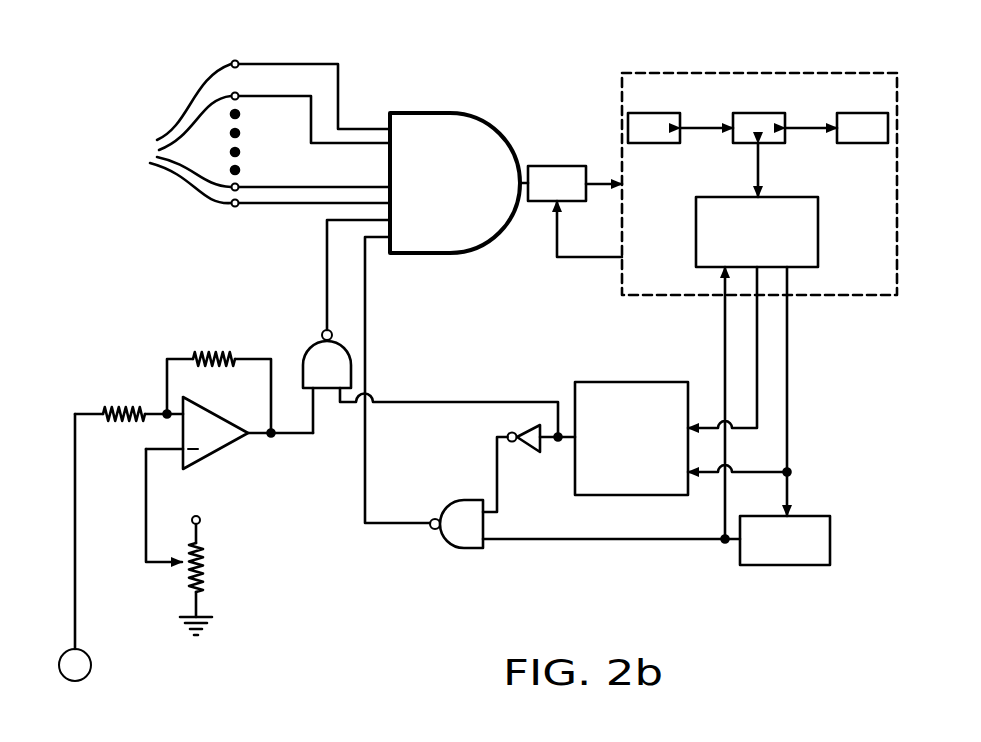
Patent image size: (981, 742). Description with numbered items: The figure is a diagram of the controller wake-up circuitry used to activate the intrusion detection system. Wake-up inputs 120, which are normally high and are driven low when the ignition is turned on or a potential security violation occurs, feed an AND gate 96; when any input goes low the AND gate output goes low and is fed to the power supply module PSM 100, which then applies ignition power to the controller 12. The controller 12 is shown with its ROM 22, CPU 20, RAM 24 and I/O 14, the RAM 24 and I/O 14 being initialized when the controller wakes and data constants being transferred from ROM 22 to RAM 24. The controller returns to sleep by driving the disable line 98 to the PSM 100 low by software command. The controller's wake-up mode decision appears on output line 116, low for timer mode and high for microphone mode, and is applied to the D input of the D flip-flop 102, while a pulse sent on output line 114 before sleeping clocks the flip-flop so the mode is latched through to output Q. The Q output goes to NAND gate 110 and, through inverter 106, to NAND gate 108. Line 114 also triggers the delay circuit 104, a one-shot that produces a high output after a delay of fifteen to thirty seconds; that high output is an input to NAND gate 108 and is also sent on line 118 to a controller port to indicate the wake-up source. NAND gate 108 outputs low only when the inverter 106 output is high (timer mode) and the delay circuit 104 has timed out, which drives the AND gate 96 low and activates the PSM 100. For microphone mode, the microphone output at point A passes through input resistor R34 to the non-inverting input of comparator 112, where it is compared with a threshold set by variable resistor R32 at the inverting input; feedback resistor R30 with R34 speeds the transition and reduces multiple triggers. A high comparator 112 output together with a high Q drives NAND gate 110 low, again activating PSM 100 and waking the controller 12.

The controller 12 is at (720, 71).
The I/O 14 is at (812, 240).
The CPU 20 is at (737, 145).
The ROM 22 is at (657, 112).
The RAM 24 is at (868, 113).
The AND gate 96 is at (440, 104).
The disable line 98 is at (578, 258).
The power supply module 100 is at (551, 166).
The D flip-flop 102 is at (595, 382).
The delay circuit 104 is at (800, 517).
The inverter 106 is at (527, 447).
The NAND gate 108 is at (462, 533).
The NAND gate 110 is at (320, 358).
The comparator 112 is at (223, 438).
The controller output line 114 is at (787, 340).
The controller output line 116 is at (757, 378).
The line 118 is at (723, 360).
The wake-up inputs 120 is at (249, 134).
The feedback resistor R30 is at (228, 358).
The variable resistor R32 is at (205, 558).
The input resistor R34 is at (125, 410).